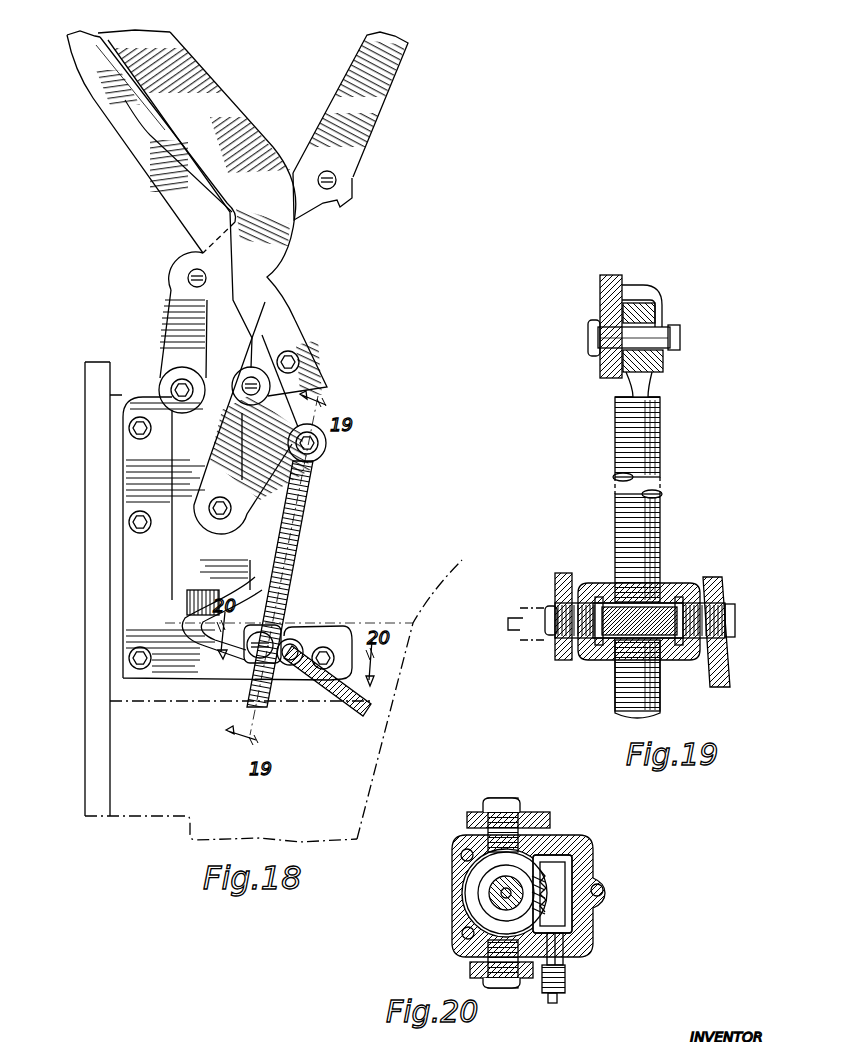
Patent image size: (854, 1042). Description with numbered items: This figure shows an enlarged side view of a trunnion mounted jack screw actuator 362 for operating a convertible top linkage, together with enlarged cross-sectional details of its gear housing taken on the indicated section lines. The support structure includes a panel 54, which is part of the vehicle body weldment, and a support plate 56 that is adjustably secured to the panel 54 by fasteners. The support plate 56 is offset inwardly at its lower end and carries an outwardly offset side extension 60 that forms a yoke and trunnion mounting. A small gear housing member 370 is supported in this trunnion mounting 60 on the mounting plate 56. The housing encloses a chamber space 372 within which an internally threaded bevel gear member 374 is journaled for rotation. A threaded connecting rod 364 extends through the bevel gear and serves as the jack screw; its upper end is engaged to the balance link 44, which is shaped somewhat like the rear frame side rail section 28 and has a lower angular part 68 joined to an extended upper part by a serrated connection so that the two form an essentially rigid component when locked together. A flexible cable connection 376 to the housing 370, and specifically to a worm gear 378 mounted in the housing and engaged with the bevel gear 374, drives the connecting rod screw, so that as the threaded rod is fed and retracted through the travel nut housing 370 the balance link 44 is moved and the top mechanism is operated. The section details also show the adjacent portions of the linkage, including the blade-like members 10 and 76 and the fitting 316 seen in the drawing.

In FIG. 18, the first blade 10 is at (100, 93).
In FIG. 18, the balance link 44 is at (130, 160).
In FIG. 18, the rear frame side rail section 28 is at (212, 100).
In FIG. 18, the link 76 is at (170, 305).
In FIG. 18, the lower angular part 68 is at (238, 431).
In FIG. 19, the lower angular part 68 is at (600, 300).
In FIG. 18, the support plate 56 is at (127, 570).
In FIG. 19, the support plate 56 is at (725, 675).
In FIG. 20, the support plate 56 is at (533, 813).
In FIG. 18, the panel 54 is at (112, 742).
In FIG. 18, the jack screw actuator 362 is at (297, 574).
In FIG. 18, the side extension 60 is at (280, 630).
In FIG. 19, the side extension 60 is at (555, 586).
In FIG. 18, the gear housing member 370 is at (307, 640).
In FIG. 19, the gear housing member 370 is at (593, 660).
In FIG. 20, the gear housing member 370 is at (460, 918).
In FIG. 18, the flexible cable connection 376 is at (340, 710).
In FIG. 19, the threaded connecting rod 364 is at (650, 498).
In FIG. 19, the internally threaded bevel gear member 374 is at (642, 596).
In FIG. 20, the internally threaded bevel gear member 374 is at (490, 860).
In FIG. 19, the adjusting nut 316 is at (513, 619).
In FIG. 20, the adjusting nut 316 is at (556, 997).
In FIG. 20, the chamber space 372 is at (470, 873).
In FIG. 20, the worm gear 378 is at (560, 868).